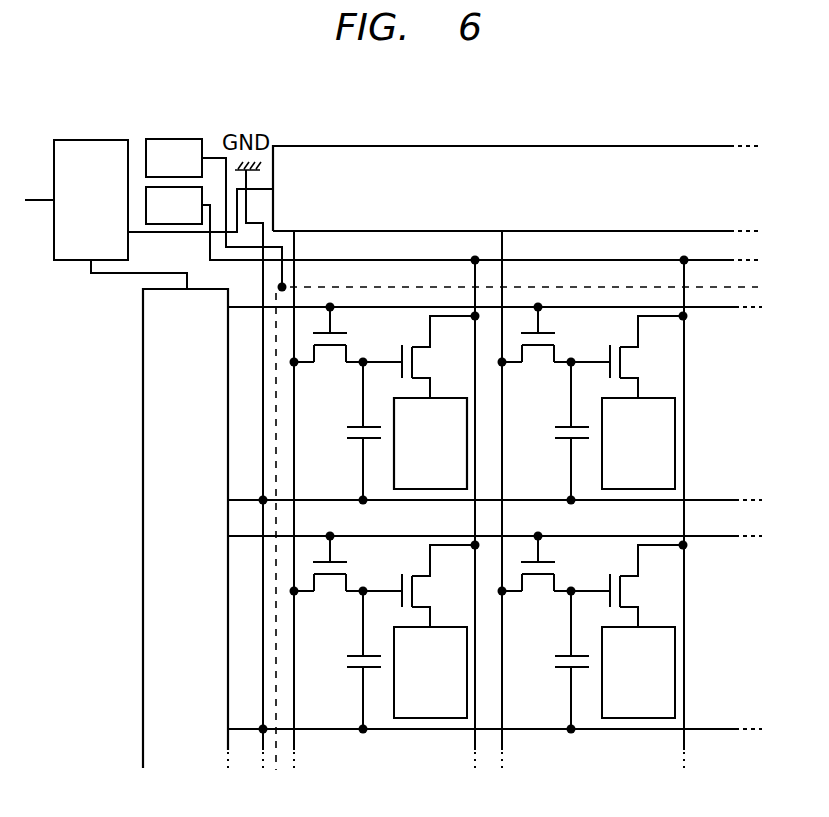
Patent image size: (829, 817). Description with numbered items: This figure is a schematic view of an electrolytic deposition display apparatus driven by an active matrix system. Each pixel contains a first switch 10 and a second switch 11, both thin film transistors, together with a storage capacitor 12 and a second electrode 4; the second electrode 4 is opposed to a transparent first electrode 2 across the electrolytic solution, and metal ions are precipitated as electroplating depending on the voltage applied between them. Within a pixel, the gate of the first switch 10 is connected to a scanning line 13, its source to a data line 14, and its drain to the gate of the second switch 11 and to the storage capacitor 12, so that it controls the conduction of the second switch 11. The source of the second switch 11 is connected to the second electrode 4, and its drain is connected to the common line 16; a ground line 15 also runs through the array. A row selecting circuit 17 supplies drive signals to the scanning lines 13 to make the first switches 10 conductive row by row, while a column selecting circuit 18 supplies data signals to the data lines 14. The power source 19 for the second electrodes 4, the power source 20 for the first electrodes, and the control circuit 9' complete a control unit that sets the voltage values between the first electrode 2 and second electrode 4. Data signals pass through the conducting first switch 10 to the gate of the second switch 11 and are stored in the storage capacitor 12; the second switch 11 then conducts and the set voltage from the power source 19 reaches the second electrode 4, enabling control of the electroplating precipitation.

The control circuit 9' is at (76, 170).
The power source for the second electrodes 19 is at (146, 205).
The power source for the first electrodes 20 is at (168, 139).
The column selecting circuit 18 is at (512, 147).
The row selecting circuit 17 is at (157, 416).
The first electrode 2 is at (711, 286).
The scanning line 13 is at (712, 308).
The ground line 15 is at (713, 499).
The common line 16 is at (688, 605).
The data line 14 is at (296, 631).
The first switch 10 is at (329, 360).
The second switch 11 is at (417, 344).
The storage capacitor 12 is at (350, 441).
The second electrode 4 is at (447, 397).